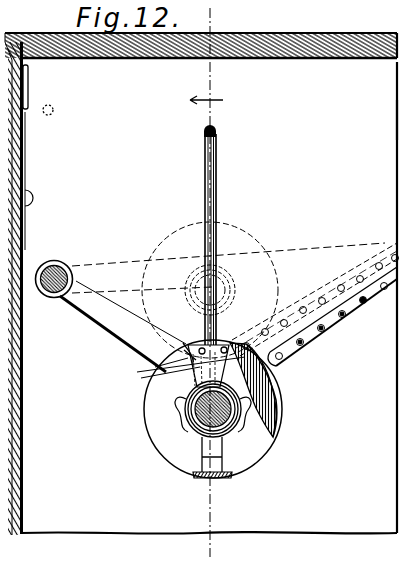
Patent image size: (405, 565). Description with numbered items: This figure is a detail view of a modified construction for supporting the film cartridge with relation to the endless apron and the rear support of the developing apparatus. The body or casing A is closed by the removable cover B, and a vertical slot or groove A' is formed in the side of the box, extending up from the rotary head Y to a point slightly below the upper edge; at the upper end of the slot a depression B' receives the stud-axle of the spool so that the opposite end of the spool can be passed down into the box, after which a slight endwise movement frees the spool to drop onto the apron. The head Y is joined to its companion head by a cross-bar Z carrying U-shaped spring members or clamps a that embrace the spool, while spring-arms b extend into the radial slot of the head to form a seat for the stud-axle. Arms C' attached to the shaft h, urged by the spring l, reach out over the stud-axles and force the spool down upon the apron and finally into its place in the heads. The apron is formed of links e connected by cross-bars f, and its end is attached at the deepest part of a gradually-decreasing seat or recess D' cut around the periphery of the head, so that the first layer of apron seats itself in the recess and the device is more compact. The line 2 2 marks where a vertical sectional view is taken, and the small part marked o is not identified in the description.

The bracket on wall o is at (28, 80).
The spring l is at (27, 248).
The shaft h is at (61, 272).
The removable cover B is at (212, 58).
The body or casing A is at (375, 120).
The section line 2 is at (206, 285).
The depression B' is at (227, 125).
The vertical slot or groove A' is at (229, 239).
The arms C' is at (123, 326).
The spring-arms b is at (183, 373).
The spring members or spring-catches a is at (188, 420).
The cross-bar Z is at (198, 472).
The seat or recess D' is at (274, 390).
The head Y is at (277, 409).
The links e is at (357, 297).
The cross-bars f is at (341, 318).